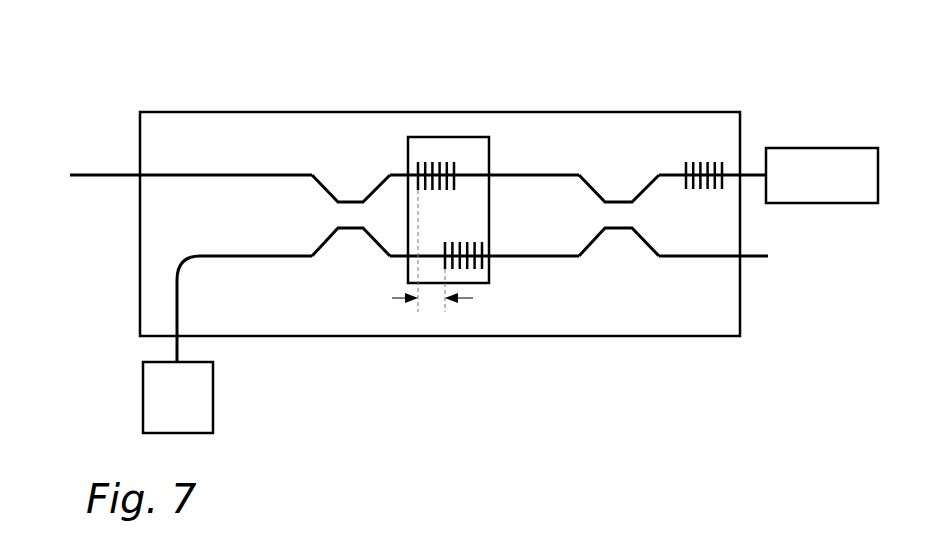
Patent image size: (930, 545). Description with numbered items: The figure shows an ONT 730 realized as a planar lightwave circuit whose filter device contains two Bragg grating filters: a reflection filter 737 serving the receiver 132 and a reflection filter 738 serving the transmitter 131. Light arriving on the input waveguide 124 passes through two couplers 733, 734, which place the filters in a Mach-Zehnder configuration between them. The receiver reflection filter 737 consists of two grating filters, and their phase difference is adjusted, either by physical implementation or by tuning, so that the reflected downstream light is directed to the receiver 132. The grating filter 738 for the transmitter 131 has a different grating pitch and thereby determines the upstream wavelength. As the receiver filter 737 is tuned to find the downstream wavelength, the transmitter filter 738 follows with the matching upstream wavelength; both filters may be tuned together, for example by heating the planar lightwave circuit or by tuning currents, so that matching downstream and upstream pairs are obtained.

The input waveguide 124 is at (97, 179).
The transmitter 131 is at (822, 175).
The receiver 132 is at (178, 397).
The ONT 730 is at (440, 224).
The coupler 733 is at (345, 174).
The coupler 734 is at (616, 181).
The reflection filter 737 is at (447, 137).
The reflection filter 738 is at (686, 162).